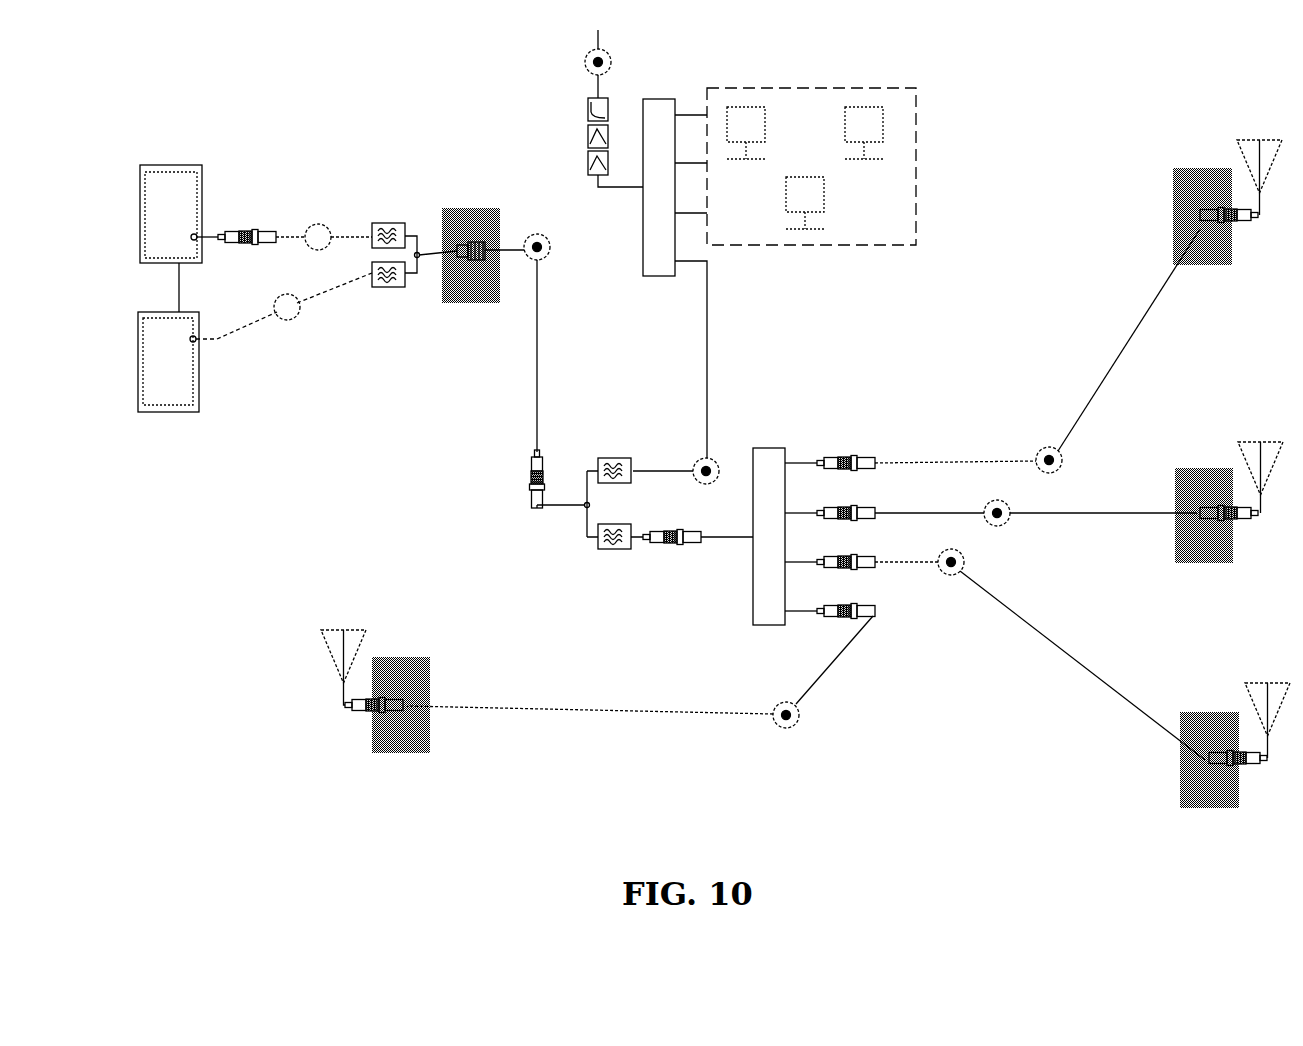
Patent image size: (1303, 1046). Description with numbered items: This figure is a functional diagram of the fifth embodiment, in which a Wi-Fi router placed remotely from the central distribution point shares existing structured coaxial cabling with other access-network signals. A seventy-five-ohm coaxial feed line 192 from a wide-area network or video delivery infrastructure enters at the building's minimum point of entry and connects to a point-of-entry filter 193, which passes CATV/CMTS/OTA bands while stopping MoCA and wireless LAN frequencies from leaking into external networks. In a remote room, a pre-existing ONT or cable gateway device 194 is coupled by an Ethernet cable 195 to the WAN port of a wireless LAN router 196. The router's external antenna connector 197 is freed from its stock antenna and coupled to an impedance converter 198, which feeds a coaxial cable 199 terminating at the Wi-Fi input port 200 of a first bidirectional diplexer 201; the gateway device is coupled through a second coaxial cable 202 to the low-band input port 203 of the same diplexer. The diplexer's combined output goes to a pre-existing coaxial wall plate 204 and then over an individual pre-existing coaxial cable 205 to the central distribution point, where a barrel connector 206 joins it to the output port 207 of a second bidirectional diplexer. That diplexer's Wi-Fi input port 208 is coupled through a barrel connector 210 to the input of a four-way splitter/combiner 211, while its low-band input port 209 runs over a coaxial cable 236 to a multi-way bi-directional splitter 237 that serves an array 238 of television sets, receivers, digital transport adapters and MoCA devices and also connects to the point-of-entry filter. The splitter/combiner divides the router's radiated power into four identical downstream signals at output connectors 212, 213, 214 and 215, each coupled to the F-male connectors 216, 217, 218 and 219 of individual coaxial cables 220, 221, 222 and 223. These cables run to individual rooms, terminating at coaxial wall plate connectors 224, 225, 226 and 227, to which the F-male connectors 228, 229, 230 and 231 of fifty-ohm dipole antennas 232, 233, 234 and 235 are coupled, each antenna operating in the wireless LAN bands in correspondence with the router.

The coaxial feed line 192 is at (582, 69).
The point-of-entry filter 193 is at (582, 141).
The cable gateway device 194 is at (159, 414).
The Ethernet cable 195 is at (166, 288).
The wireless LAN router 196 is at (146, 161).
The external antenna connector 197 is at (209, 232).
The impedance converter 198 is at (261, 221).
The RG-6 cable 199 is at (328, 220).
The Wi-Fi input port 200 is at (393, 221).
The bidirectional diplexer 201 is at (418, 279).
The RG-6 cable 202 is at (272, 326).
The low-band input port 203 is at (385, 293).
The coaxial wall plate 204 is at (478, 302).
The RG-6 cable 205 is at (545, 304).
The barrel connector 206 is at (516, 464).
The output port 207 is at (580, 509).
The Wi-Fi input port 208 is at (621, 564).
The low-band input port 209 is at (611, 445).
The barrel connector 210 is at (676, 553).
The distribution unit 211 is at (749, 578).
The output F-female connector 212 is at (799, 457).
The output F-female connector 213 is at (798, 509).
The output F-female connector 214 is at (799, 556).
The output F-female connector 215 is at (803, 604).
The F-male connector 216 is at (844, 454).
The F-male connector 217 is at (848, 502).
The F-male connector 218 is at (852, 553).
The F-male connector 219 is at (852, 603).
The RG-6 cable 220 is at (1036, 444).
The RG-6 cable 221 is at (1018, 526).
The RG-6 cable 222 is at (963, 578).
The RG-6 cable 223 is at (812, 695).
The coaxial wall plate F-female connector 224 is at (1187, 161).
The coaxial wall plate F-female connector 225 is at (1187, 464).
The coaxial wall plate F-female connector 226 is at (1191, 702).
The coaxial wall plate F-female connector 227 is at (424, 651).
The F-male connector 228 is at (1248, 233).
The F-male connector 229 is at (1249, 533).
The F-male connector 230 is at (1251, 774).
The F-male connector 231 is at (357, 719).
The dipole antenna 232 is at (1241, 130).
The dipole antenna 233 is at (1237, 431).
The dipole antenna 234 is at (1242, 677).
The dipole antenna 235 is at (332, 619).
The RG-6 cable 236 is at (712, 393).
The multi-way bi-directional splitter 237 is at (637, 248).
The array of multimedia devices 238 is at (826, 249).